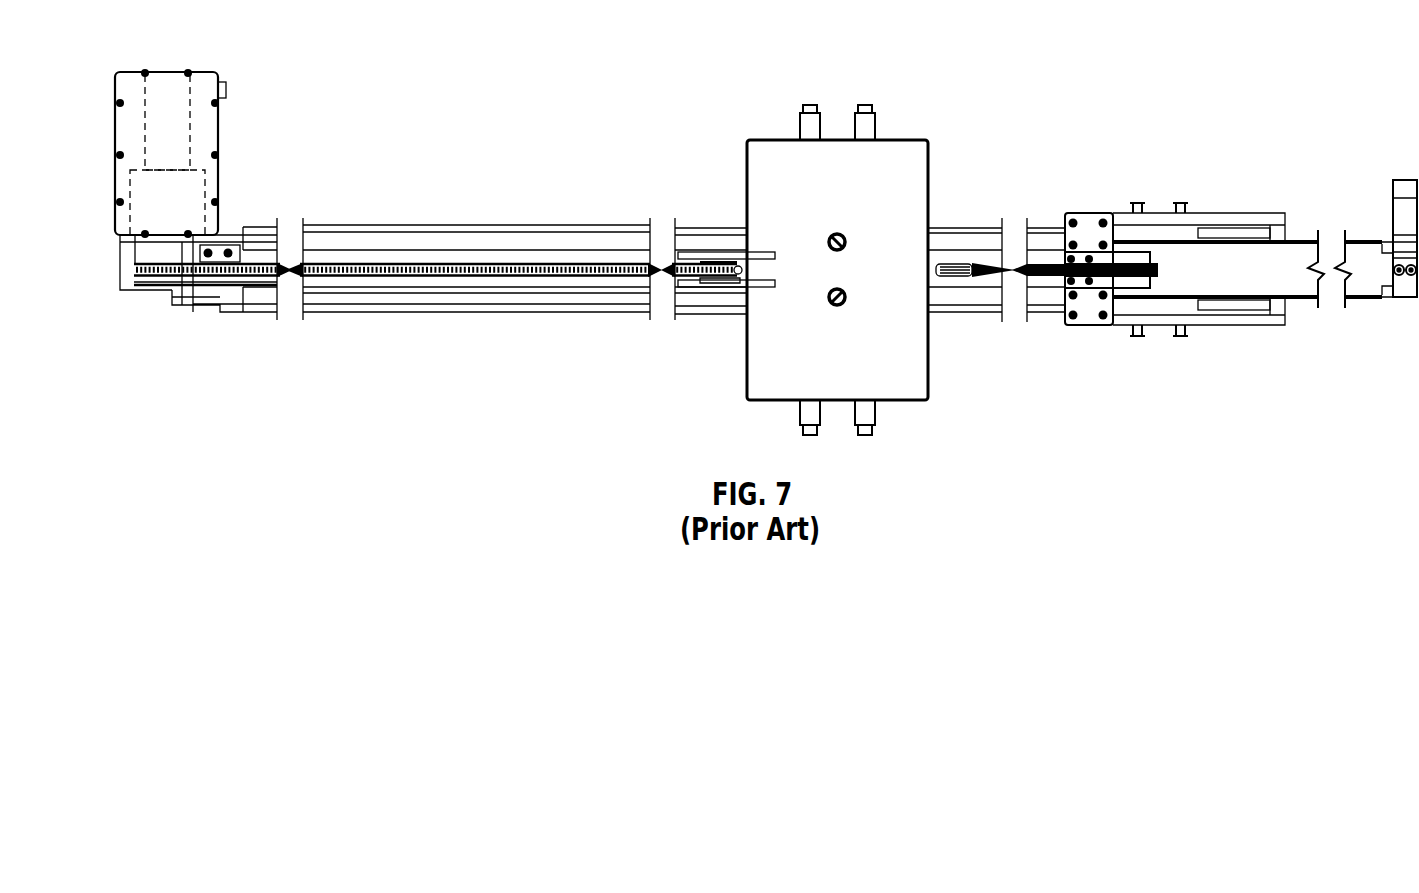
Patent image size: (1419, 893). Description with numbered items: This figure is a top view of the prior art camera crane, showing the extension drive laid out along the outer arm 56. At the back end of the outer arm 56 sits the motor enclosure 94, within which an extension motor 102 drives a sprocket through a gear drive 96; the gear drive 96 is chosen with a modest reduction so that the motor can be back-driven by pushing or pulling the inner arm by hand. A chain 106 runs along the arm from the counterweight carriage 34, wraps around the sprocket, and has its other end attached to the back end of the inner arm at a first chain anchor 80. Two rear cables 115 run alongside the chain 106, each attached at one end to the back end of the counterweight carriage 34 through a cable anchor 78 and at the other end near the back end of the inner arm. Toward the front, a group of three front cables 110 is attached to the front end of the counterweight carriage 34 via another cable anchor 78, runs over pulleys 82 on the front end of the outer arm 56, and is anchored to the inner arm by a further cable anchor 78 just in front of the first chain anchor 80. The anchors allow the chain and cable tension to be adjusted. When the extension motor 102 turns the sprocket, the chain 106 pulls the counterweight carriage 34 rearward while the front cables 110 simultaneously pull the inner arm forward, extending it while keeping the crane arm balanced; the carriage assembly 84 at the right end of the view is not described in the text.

The counterweight carriage 34 is at (912, 362).
The outer arm 56 is at (558, 246).
The cable anchor 78 is at (777, 255).
The first chain anchor 80 is at (735, 280).
The pulleys 82 is at (145, 290).
The carriage assembly 84 is at (1208, 218).
The motor enclosure 94 is at (205, 133).
The gear drive 96 is at (160, 262).
The extension motor 102 is at (207, 123).
The chain 106 is at (712, 262).
The front cables 110 is at (1035, 265).
The rear cables 115 is at (405, 262).